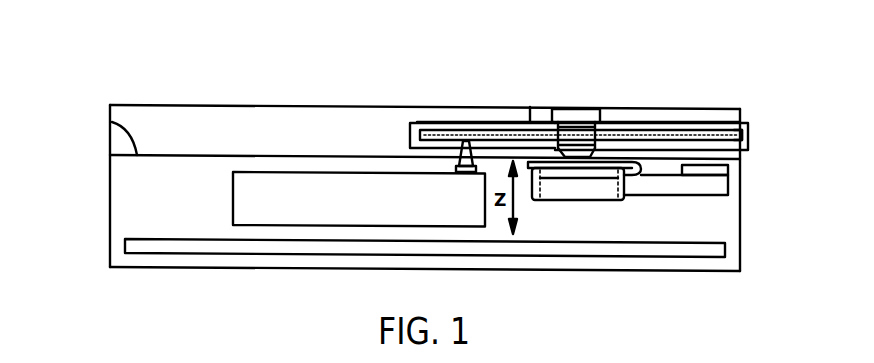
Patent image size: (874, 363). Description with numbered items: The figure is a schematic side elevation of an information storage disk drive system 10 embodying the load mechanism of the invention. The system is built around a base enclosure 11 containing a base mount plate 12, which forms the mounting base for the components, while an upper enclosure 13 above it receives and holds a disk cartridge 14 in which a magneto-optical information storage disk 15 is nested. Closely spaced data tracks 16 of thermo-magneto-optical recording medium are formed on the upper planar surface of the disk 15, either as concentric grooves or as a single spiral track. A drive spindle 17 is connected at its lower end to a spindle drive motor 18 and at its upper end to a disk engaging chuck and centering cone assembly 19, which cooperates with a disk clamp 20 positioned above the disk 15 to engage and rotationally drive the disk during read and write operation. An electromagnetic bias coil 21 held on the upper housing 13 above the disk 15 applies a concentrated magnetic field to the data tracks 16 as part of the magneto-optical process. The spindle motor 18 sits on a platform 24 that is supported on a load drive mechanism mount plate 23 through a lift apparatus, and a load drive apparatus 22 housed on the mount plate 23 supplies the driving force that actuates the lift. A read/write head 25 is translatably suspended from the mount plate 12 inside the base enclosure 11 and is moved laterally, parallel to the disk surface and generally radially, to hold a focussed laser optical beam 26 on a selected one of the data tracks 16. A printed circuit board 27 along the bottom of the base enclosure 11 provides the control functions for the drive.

The information storage disk drive system 10 is at (96, 165).
The base enclosure 11 is at (108, 232).
The base mount plate 12 is at (110, 120).
The upper enclosure 13 is at (213, 105).
The disk cartridge 14 is at (676, 122).
The magneto-optical information storage disk 15 is at (748, 135).
The data tracks 16 is at (447, 134).
The drive spindle 17 is at (592, 152).
The spindle drive motor 18 is at (550, 200).
The disk engaging chuck and centering cone assembly 19 is at (608, 148).
The disk clamp 20 is at (558, 128).
The electromagnetic bias coil 21 is at (417, 121).
The load drive apparatus 22 is at (728, 170).
The load drive mechanism mount plate 23 is at (681, 195).
The platform 24 is at (640, 170).
The read/write head 25 is at (305, 172).
The focussed laser optical beam 26 is at (458, 146).
The printed circuit board 27 is at (603, 256).